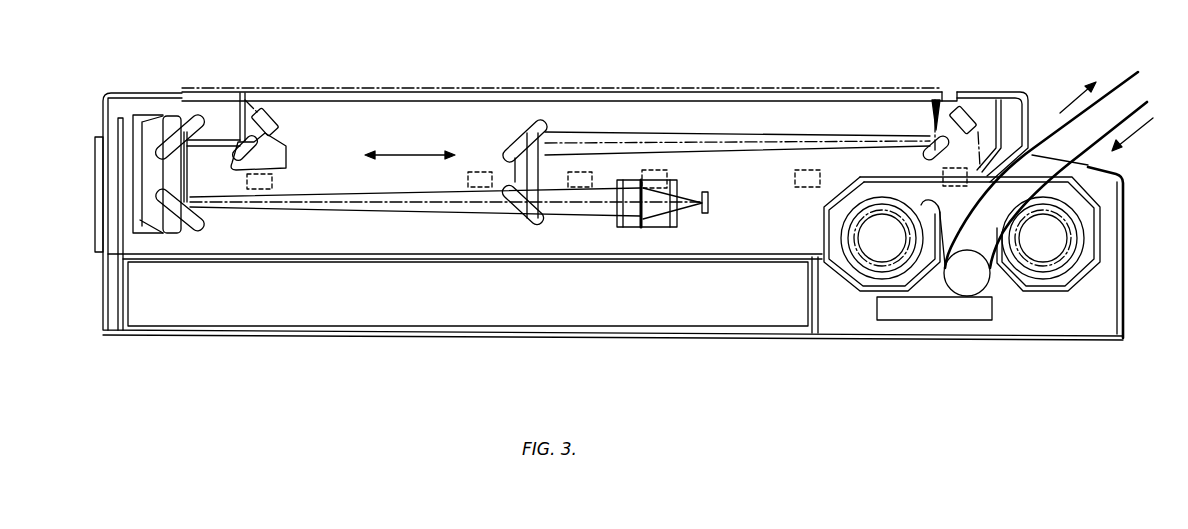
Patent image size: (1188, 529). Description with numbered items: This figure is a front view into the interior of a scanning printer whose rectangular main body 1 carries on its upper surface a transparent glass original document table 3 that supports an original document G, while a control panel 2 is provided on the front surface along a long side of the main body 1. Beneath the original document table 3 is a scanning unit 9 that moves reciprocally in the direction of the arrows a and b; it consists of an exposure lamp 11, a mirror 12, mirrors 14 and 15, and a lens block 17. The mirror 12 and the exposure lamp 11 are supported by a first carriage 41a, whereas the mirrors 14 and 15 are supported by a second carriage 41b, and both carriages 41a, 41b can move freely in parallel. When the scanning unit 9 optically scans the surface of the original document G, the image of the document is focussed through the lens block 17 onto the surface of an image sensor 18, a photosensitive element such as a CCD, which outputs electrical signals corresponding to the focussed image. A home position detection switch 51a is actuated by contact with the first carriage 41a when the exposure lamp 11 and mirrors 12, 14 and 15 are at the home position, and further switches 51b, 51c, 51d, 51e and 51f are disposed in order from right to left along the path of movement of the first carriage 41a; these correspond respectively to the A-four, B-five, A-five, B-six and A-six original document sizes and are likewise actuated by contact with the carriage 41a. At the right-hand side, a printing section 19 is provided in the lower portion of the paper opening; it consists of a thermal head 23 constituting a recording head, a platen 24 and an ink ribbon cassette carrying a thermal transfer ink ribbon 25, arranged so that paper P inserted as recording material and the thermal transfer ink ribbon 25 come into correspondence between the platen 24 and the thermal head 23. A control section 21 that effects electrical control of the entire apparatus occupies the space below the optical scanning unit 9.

The main body 1 is at (754, 341).
The control panel 2 is at (95, 229).
The original document table 3 is at (503, 100).
The scanning unit 9 is at (336, 133).
The exposure lamp 11 is at (265, 110).
The mirror 12 is at (237, 152).
The mirror 14 is at (198, 120).
The mirror 15 is at (175, 205).
The lens block 17 is at (663, 221).
The image sensor 18 is at (710, 201).
The printing section 19 is at (1024, 325).
The control section 21 is at (572, 313).
The thermal head 23 is at (918, 316).
The platen 24 is at (967, 280).
The thermal transfer ink ribbon 25 is at (992, 233).
The first carriage 41a is at (292, 163).
The second carriage 41b is at (148, 175).
The home position detection switch 51a is at (259, 190).
The switch 51b is at (943, 172).
The switch 51c is at (806, 188).
The switch 51d is at (650, 189).
The switch 51e is at (577, 188).
The switch 51f is at (475, 188).
The original document G is at (851, 90).
The paper P is at (1132, 115).
The direction of carriage movement a is at (455, 154).
The direction of carriage movement b is at (399, 154).